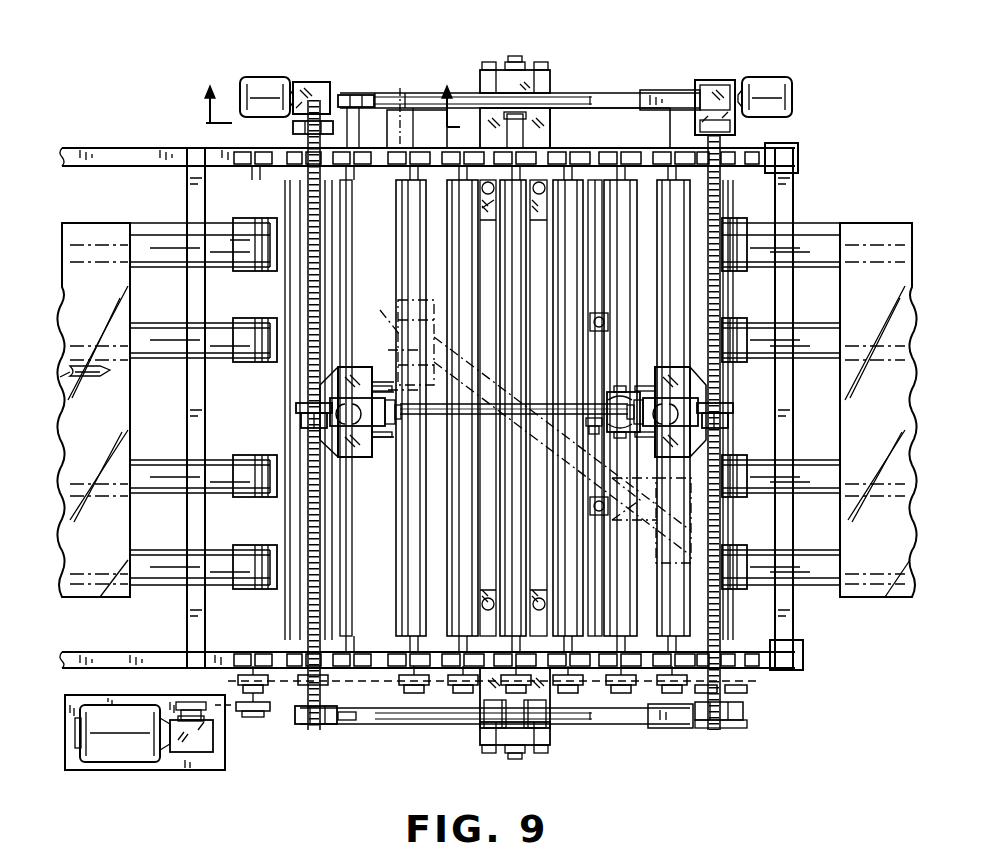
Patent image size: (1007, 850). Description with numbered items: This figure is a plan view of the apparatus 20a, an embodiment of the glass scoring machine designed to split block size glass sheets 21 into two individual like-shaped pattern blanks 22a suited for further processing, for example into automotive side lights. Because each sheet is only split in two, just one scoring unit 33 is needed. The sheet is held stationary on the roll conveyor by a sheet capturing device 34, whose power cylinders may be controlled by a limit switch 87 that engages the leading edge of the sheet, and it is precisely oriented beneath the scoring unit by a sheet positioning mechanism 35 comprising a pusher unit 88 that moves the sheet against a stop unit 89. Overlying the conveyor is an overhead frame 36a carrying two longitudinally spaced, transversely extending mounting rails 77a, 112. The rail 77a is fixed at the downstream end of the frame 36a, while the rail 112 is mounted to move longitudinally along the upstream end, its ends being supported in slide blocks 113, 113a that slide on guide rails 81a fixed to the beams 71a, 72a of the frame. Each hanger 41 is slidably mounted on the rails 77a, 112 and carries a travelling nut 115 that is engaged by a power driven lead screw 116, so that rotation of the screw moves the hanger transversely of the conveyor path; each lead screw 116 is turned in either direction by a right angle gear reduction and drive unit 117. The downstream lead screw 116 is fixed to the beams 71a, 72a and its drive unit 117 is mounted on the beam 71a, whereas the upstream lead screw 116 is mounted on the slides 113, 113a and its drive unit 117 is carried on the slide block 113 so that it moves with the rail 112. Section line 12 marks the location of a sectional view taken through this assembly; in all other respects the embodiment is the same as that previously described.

The apparatus 20a is at (715, 46).
The block size glass sheet 21 is at (105, 304).
The pattern blank 22a is at (898, 304).
The scoring unit 33 is at (612, 392).
The sheet capturing device 34 is at (596, 312).
The sheet positioning mechanism 35 is at (535, 70).
The overhead frame 36a is at (468, 94).
The hanger 41 is at (338, 368).
The beam 71a is at (637, 95).
The beam 72a is at (598, 720).
The mounting rail 77a is at (665, 715).
The guide rail 81a is at (572, 97).
The limit switch 87 is at (590, 422).
The pusher unit 88 is at (555, 134).
The stop unit 89 is at (556, 693).
The mounting rail 112 is at (358, 692).
The slide block 113 is at (341, 90).
The slide block 113a is at (348, 732).
The travelling nut 115 is at (300, 420).
The lead screw 116 is at (300, 712).
The right angle gear reduction and drive unit 117 is at (257, 82).
The section line 12- 12 is at (329, 116).